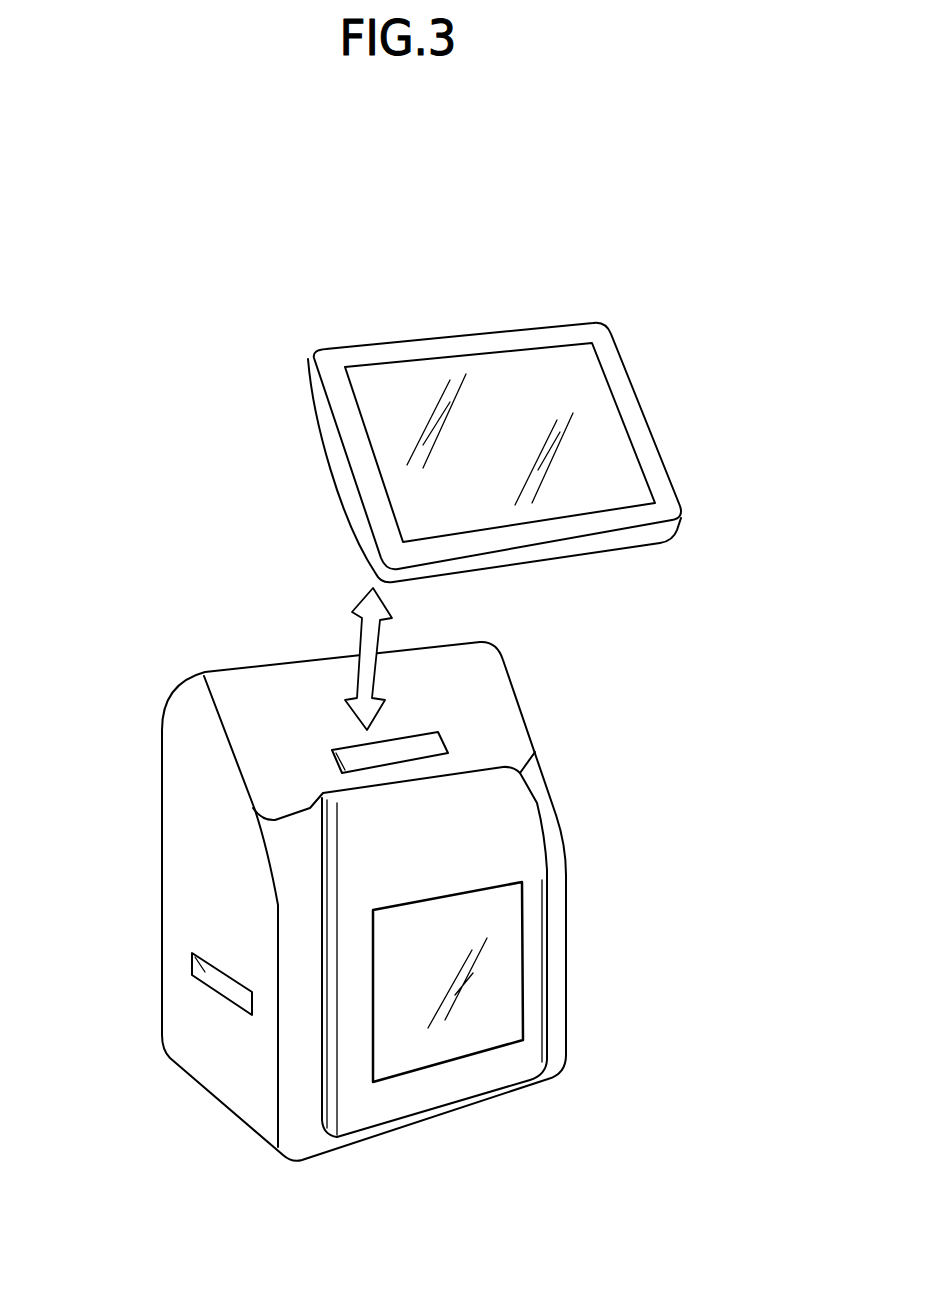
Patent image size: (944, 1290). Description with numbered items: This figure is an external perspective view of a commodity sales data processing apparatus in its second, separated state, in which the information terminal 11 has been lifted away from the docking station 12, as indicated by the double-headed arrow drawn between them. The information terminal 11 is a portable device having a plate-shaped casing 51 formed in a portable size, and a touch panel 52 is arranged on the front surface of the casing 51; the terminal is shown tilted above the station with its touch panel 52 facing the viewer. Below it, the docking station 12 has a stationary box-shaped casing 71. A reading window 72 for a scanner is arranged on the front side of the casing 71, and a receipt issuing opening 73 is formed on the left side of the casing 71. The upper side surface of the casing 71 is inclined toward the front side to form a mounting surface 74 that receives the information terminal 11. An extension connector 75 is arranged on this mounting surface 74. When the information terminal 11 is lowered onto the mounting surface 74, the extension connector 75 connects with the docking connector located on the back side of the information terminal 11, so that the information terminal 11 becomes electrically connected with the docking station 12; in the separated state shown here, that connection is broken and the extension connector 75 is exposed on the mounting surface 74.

The information terminal 11 is at (522, 417).
The docking station 12 is at (348, 901).
The casing 51 is at (625, 357).
The touch panel 52 is at (610, 438).
The casing 71 is at (180, 883).
The reading window 72 is at (503, 980).
The receipt issuing opening 73 is at (217, 983).
The mounting surface 74 is at (490, 688).
The extension connector 75 is at (435, 745).